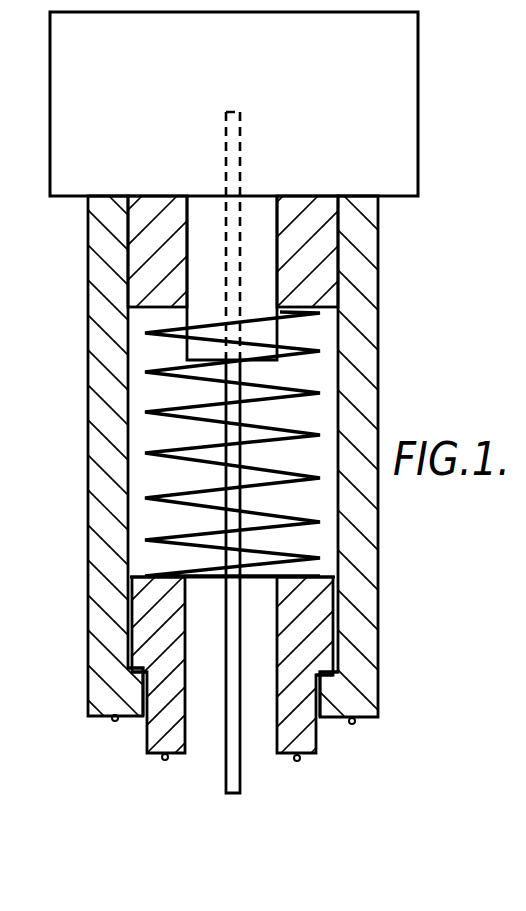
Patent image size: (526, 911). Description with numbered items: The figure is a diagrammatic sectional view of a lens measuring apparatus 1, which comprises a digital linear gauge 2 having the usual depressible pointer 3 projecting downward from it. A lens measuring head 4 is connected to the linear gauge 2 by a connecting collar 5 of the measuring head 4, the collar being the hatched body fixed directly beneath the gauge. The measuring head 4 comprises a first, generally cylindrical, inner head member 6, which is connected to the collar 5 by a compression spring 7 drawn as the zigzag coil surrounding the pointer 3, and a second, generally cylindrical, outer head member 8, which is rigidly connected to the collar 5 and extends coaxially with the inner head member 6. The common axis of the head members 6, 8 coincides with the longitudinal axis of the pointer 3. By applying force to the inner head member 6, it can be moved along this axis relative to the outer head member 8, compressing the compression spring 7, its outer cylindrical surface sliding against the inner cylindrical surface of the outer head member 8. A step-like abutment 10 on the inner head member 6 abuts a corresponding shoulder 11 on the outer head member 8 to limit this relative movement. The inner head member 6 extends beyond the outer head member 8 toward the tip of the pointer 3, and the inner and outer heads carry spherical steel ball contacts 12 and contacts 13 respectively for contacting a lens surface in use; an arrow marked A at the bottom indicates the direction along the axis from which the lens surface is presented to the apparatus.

The lens measuring apparatus 1 is at (72, 366).
The digital linear gauge 2 is at (63, 141).
The depressible pointer 3 is at (228, 776).
The lens measuring head 4 is at (392, 585).
The connecting collar 5 is at (313, 281).
The first head member 6 is at (152, 730).
The compression spring 7 is at (302, 394).
The second head member 8 is at (101, 657).
The step-like abutment 10 is at (140, 668).
The shoulder 11 is at (135, 680).
The contacts 12 is at (165, 761).
The contacts 13 is at (115, 722).
The direction of movement A is at (232, 818).